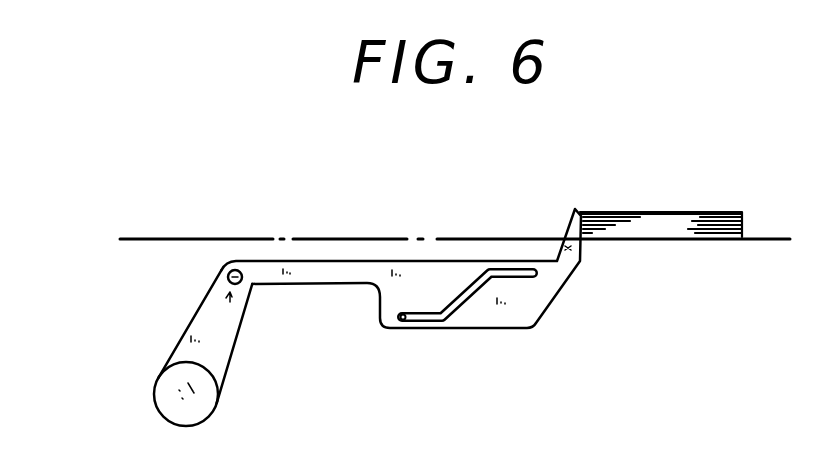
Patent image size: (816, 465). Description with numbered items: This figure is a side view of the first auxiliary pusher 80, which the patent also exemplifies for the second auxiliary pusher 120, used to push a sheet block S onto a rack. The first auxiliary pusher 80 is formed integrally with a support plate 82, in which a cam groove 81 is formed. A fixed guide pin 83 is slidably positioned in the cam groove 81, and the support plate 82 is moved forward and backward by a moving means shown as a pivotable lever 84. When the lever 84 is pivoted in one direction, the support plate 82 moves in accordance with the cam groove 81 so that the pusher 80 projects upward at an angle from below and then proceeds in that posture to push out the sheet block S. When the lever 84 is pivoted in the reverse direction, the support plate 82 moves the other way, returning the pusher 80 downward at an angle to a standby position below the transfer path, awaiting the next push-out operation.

The first auxiliary pusher 80 is at (369, 280).
The second auxiliary pusher 120 is at (369, 280).
The cam groove 81 is at (453, 312).
The support plate 82 is at (518, 318).
The fixed guide pin 83 is at (410, 322).
The pivotable lever 84 is at (228, 343).
The sheet block S is at (662, 218).